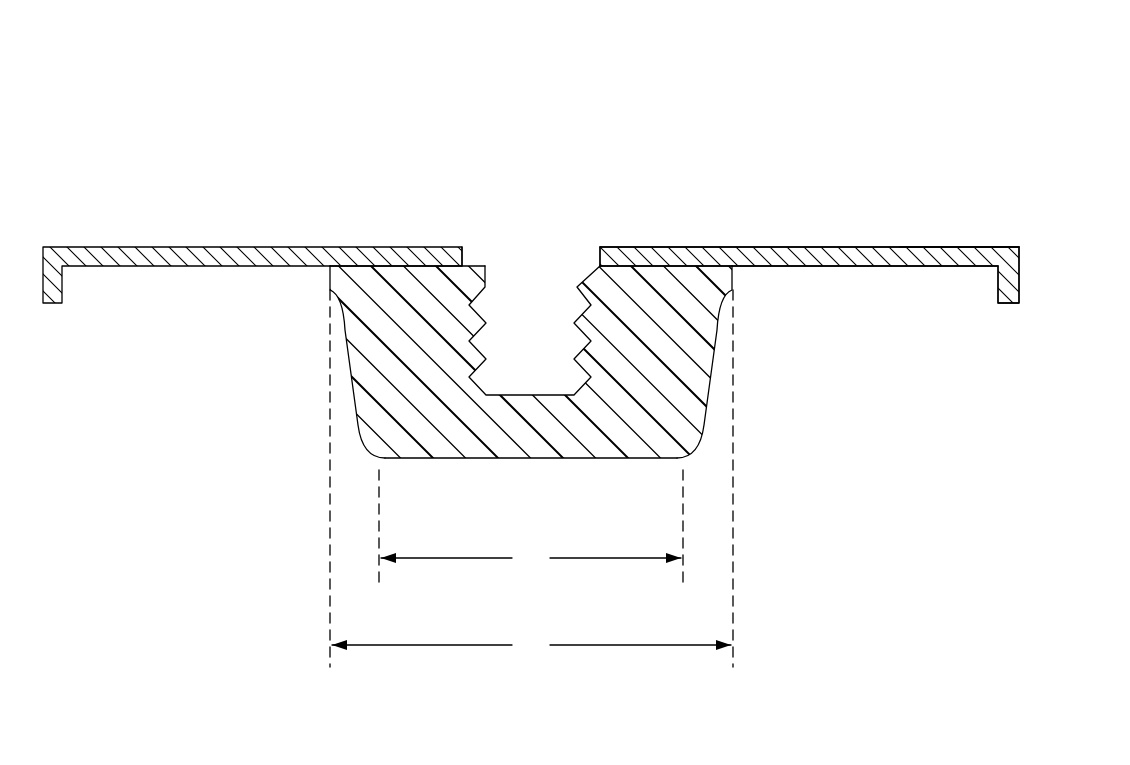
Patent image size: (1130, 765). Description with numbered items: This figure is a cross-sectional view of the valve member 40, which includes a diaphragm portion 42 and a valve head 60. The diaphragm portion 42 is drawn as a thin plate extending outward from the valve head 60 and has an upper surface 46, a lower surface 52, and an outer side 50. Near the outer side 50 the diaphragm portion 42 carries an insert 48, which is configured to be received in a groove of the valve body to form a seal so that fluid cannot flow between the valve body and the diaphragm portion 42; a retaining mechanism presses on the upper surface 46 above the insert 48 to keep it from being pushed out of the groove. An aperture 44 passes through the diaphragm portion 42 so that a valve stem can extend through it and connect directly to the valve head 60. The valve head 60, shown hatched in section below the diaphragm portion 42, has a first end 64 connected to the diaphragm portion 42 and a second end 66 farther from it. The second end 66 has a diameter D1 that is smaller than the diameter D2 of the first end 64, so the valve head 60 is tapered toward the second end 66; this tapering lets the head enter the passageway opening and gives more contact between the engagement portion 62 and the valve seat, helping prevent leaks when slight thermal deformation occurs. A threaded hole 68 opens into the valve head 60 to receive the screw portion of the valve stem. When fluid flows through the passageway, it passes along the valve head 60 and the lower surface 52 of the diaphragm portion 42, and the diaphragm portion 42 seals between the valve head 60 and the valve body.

The valve member 40 is at (221, 97).
The diaphragm portion 42 is at (1019, 248).
The aperture 44 is at (598, 258).
The upper surface 46 is at (792, 247).
The insert 48 is at (1019, 289).
The outer side 50 is at (957, 247).
The lower surface 52 is at (912, 267).
The valve head 60 is at (398, 367).
The engagement portion 62 is at (682, 398).
The first end 64 is at (670, 266).
The second end 66 is at (457, 459).
The threaded hole 68 is at (487, 287).